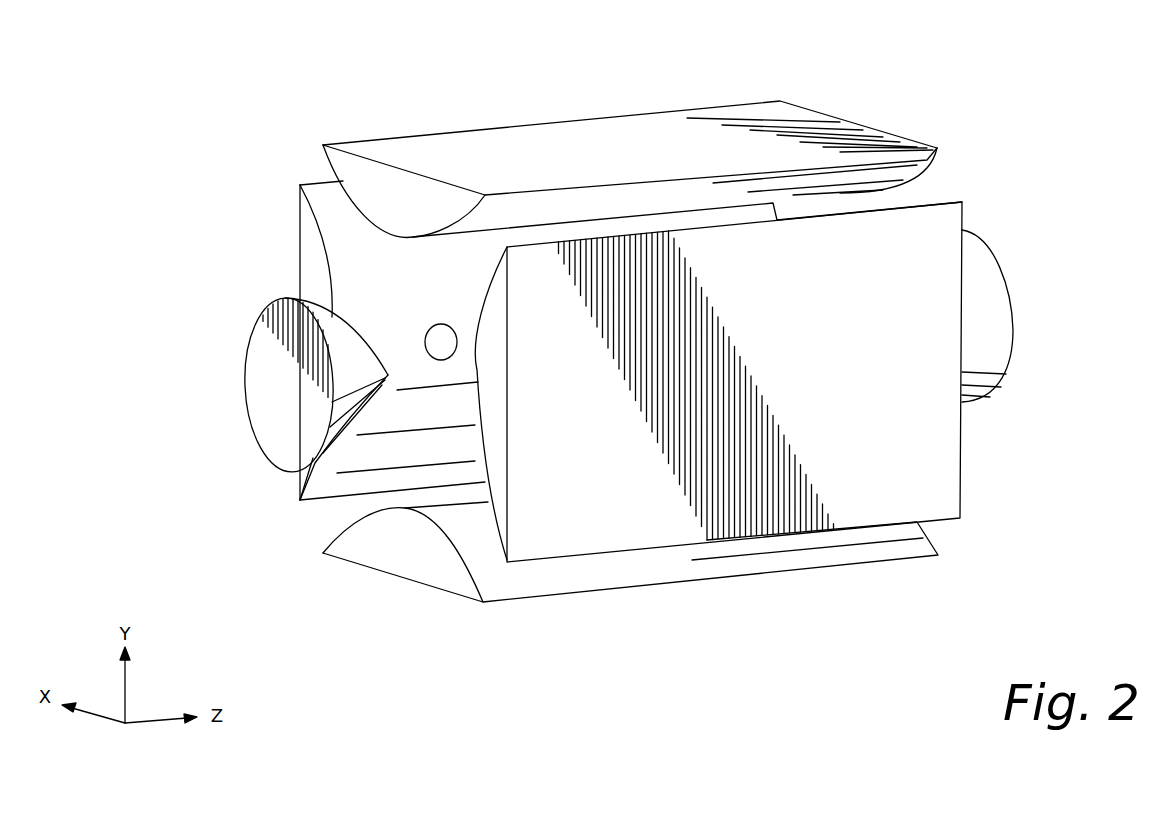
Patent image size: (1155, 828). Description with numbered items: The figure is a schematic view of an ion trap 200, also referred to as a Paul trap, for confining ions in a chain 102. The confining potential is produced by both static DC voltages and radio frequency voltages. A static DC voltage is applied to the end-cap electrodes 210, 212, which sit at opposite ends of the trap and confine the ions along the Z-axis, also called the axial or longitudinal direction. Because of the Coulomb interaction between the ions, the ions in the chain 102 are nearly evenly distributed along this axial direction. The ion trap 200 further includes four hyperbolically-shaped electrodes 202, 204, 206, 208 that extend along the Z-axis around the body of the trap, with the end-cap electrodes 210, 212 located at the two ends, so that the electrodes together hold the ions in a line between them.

The ion trap 200 is at (1012, 38).
The hyperbolically-shaped electrode 202 is at (953, 468).
The hyperbolically-shaped electrode 204 is at (308, 251).
The hyperbolically-shaped electrode 206 is at (663, 575).
The hyperbolically-shaped electrode 208 is at (580, 127).
The end-cap electrode 210 is at (253, 360).
The end-cap electrode 212 is at (1003, 297).
The chain 102 is at (438, 330).